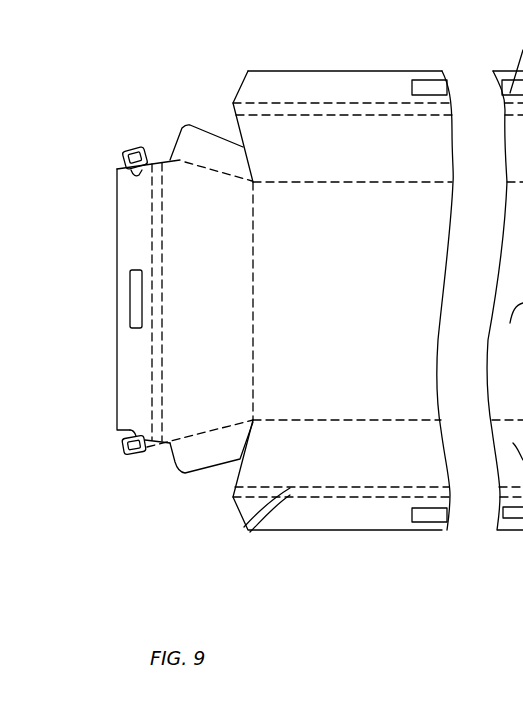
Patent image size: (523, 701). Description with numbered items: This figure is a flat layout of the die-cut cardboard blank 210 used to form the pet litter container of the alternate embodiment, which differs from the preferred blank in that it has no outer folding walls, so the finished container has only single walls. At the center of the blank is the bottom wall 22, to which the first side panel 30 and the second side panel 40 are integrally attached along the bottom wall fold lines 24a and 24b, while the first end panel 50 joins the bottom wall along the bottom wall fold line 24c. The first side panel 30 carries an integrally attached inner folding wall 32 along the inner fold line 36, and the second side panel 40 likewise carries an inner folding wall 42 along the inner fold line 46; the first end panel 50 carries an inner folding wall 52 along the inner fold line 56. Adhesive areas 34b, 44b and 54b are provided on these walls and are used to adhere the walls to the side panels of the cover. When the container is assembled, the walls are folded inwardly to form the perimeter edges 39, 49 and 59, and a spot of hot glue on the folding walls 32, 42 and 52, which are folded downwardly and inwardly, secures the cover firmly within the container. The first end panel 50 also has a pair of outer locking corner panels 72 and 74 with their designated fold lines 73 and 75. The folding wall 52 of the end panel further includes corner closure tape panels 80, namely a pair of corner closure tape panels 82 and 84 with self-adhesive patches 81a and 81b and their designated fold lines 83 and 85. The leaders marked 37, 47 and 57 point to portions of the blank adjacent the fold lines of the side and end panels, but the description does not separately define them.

The cardboard blank 210 is at (108, 182).
The bottom wall 22 is at (410, 318).
The bottom wall fold line 24a is at (300, 182).
The bottom wall fold line 24b is at (347, 401).
The bottom wall fold line 24c is at (253, 315).
The first side panel 30 is at (393, 158).
The inner folding wall 32 is at (397, 87).
The adhesive area 34b is at (420, 90).
The inner fold line 36 is at (352, 115).
The slit 37 is at (285, 107).
The perimeter edge 39 is at (323, 70).
The second side panel 40 is at (390, 470).
The inner folding wall 42 is at (345, 513).
The adhesive area 44b is at (425, 515).
The inner fold line 46 is at (245, 522).
The fold lines 47 is at (330, 493).
The perimeter edge 49 is at (437, 532).
The first end panel 50 is at (170, 317).
The inner folding wall 52 is at (137, 242).
The adhesive area 54b is at (138, 287).
The inner fold line 56 is at (162, 395).
The fold region 57 is at (157, 207).
The perimeter edge 59 is at (117, 308).
The outer locking corner panel 72 is at (210, 140).
The fold line 73 is at (187, 167).
The outer locking corner panel 74 is at (212, 462).
The fold line 75 is at (235, 426).
The corner closure tape panels 80 is at (123, 460).
The self-adhesive patch 81a is at (143, 145).
The self-adhesive patch 81b is at (123, 447).
The corner closure tape panel 82 is at (148, 143).
The fold line 83 is at (128, 168).
The corner closure tape panel 84 is at (137, 458).
The fold line 85 is at (137, 432).